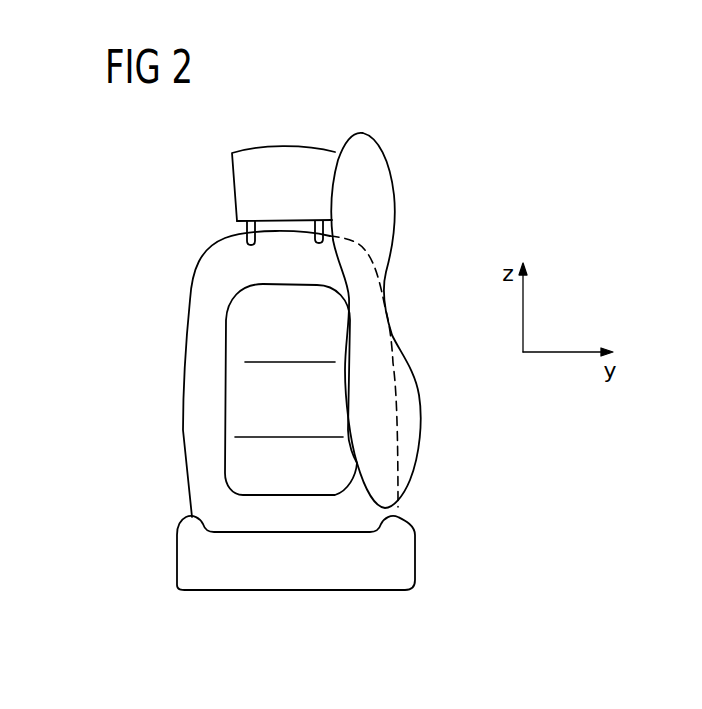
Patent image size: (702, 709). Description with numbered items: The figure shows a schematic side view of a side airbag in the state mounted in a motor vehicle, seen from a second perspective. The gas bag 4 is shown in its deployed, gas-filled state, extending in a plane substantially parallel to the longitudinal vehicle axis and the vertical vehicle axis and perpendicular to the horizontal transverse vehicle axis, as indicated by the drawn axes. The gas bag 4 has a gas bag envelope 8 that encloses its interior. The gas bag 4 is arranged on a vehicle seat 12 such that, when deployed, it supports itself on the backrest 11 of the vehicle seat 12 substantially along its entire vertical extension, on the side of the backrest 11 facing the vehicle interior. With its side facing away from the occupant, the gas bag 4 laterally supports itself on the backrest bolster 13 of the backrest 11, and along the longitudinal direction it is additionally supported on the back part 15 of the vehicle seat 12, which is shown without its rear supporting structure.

The gas bag 4 is at (370, 128).
The gas bag envelope 8 is at (393, 195).
The backrest 11 is at (183, 427).
The vehicle seat 12 is at (405, 592).
The backrest bolster 13 is at (205, 313).
The back part 15 is at (278, 418).